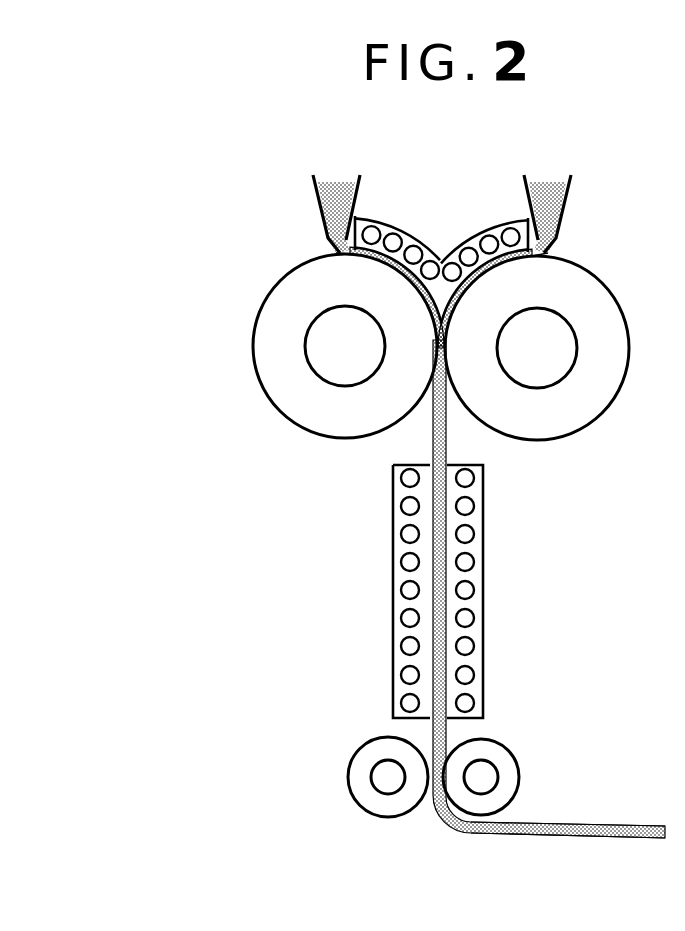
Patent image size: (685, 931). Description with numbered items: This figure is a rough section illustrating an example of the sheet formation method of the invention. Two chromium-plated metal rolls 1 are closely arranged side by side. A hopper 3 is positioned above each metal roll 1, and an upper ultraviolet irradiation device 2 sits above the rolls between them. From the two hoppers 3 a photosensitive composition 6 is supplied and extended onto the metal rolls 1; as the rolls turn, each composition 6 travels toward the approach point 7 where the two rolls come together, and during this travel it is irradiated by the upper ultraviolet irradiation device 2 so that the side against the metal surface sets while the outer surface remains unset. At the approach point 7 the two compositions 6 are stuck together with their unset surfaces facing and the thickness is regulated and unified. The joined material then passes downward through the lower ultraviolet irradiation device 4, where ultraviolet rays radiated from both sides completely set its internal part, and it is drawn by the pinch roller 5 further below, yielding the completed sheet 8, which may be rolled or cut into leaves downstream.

The metal roll 1 is at (278, 384).
The upper ultraviolet irradiation device 2 is at (483, 232).
The hopper 3 is at (318, 194).
The lower ultraviolet irradiation device 4 is at (405, 566).
The pinch roller 5 is at (356, 778).
The photosensitive composition 6 is at (337, 245).
The approach point 7 is at (444, 347).
The sheet 8 is at (577, 822).